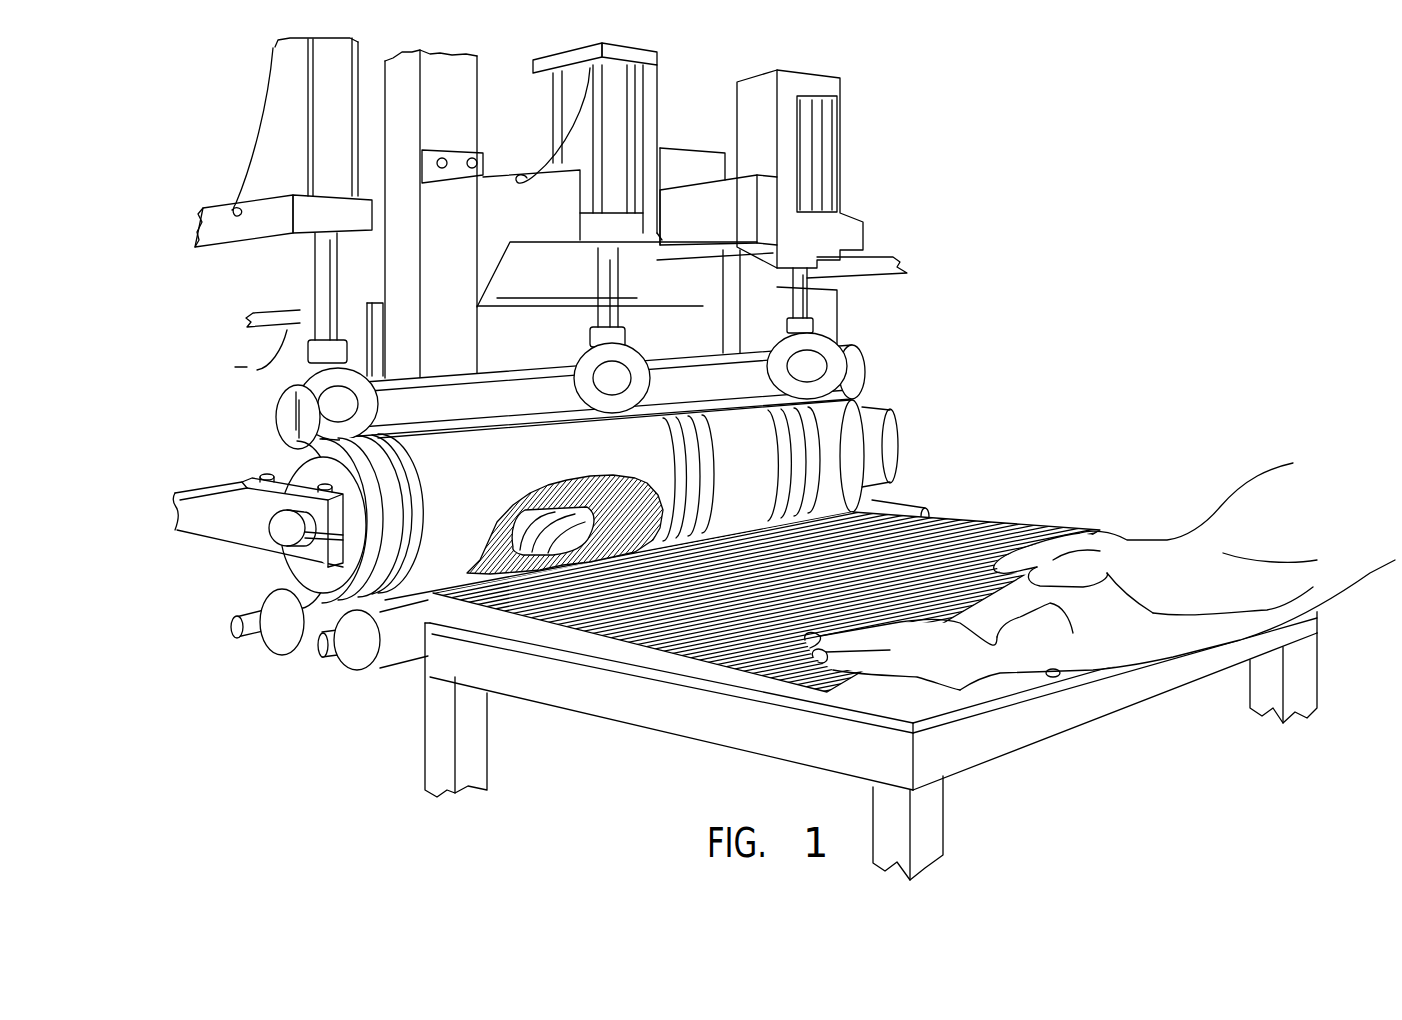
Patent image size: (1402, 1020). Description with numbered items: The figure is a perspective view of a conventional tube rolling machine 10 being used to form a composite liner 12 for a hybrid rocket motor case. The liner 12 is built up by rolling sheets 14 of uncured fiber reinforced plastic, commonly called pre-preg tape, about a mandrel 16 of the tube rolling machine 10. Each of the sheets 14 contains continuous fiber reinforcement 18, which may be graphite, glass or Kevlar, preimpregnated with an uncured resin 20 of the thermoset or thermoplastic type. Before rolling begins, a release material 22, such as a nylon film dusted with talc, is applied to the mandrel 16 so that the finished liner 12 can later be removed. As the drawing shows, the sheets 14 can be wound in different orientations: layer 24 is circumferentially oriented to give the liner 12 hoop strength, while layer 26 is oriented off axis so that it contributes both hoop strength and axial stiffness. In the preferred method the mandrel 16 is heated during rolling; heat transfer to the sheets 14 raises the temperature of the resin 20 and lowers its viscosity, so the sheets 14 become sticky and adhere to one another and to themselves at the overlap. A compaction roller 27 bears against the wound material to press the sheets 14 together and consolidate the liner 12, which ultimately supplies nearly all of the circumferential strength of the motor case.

The tube rolling machine 10 is at (906, 200).
The composite liner 12 is at (893, 468).
The sheets 14 is at (967, 550).
The mandrel 16 is at (280, 650).
The continuous fiber reinforcement 18 is at (700, 625).
The uncured resin 20 is at (575, 635).
The release material 22 is at (363, 657).
The layer 24 is at (515, 585).
The layer 26 is at (455, 565).
The compaction roller 27 is at (292, 420).